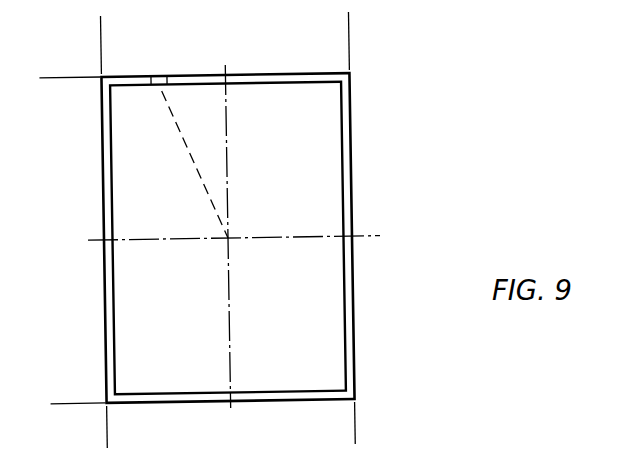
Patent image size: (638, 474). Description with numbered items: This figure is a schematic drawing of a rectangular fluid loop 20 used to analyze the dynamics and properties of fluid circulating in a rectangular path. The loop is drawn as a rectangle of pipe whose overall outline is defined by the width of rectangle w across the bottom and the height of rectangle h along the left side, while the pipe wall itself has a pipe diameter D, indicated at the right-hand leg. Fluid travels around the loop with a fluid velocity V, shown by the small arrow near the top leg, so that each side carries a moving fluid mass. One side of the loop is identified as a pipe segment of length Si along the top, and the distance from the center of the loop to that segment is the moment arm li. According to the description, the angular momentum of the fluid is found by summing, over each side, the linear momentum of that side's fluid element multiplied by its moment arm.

The mask frame 20 is at (350, 151).
The length of one pipe segment Si is at (352, 22).
The fluid velocity V is at (160, 67).
The height of rectangle h is at (56, 75).
The moment arm to one segment li is at (112, 279).
The pipe diameter D is at (318, 322).
The width of rectangle w is at (352, 438).